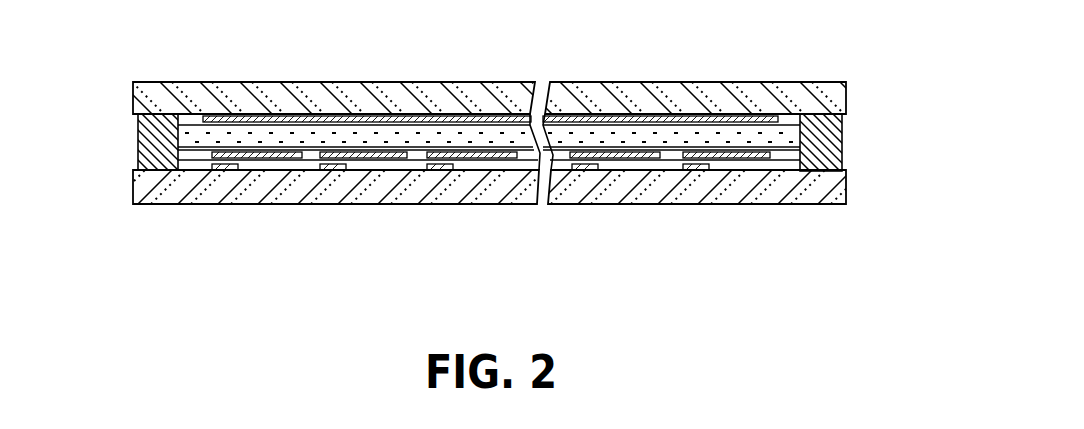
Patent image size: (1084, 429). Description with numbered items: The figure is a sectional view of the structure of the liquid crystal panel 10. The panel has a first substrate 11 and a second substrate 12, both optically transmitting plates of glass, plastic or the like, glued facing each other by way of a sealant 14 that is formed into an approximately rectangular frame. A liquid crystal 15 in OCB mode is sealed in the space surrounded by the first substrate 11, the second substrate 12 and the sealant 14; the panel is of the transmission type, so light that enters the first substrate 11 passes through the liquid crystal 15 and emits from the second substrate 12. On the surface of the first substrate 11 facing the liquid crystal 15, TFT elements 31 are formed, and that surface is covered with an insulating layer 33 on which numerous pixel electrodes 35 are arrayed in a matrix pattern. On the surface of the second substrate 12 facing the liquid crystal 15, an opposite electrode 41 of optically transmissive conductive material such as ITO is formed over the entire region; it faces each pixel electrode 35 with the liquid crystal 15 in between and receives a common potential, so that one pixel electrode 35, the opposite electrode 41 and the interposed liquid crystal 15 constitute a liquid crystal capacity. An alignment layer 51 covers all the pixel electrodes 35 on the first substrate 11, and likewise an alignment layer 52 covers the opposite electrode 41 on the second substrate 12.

The liquid crystal panel 10 is at (496, 138).
The first substrate 11 is at (846, 190).
The second substrate 12 is at (846, 102).
The sealant 14 is at (842, 145).
The liquid crystal 15 is at (192, 138).
The TFT element 31 is at (220, 170).
The insulating layer 33 is at (181, 165).
The pixel electrode 35 is at (386, 158).
The opposite electrode 41 is at (582, 116).
The alignment layer 51 is at (190, 150).
The alignment layer 52 is at (193, 123).